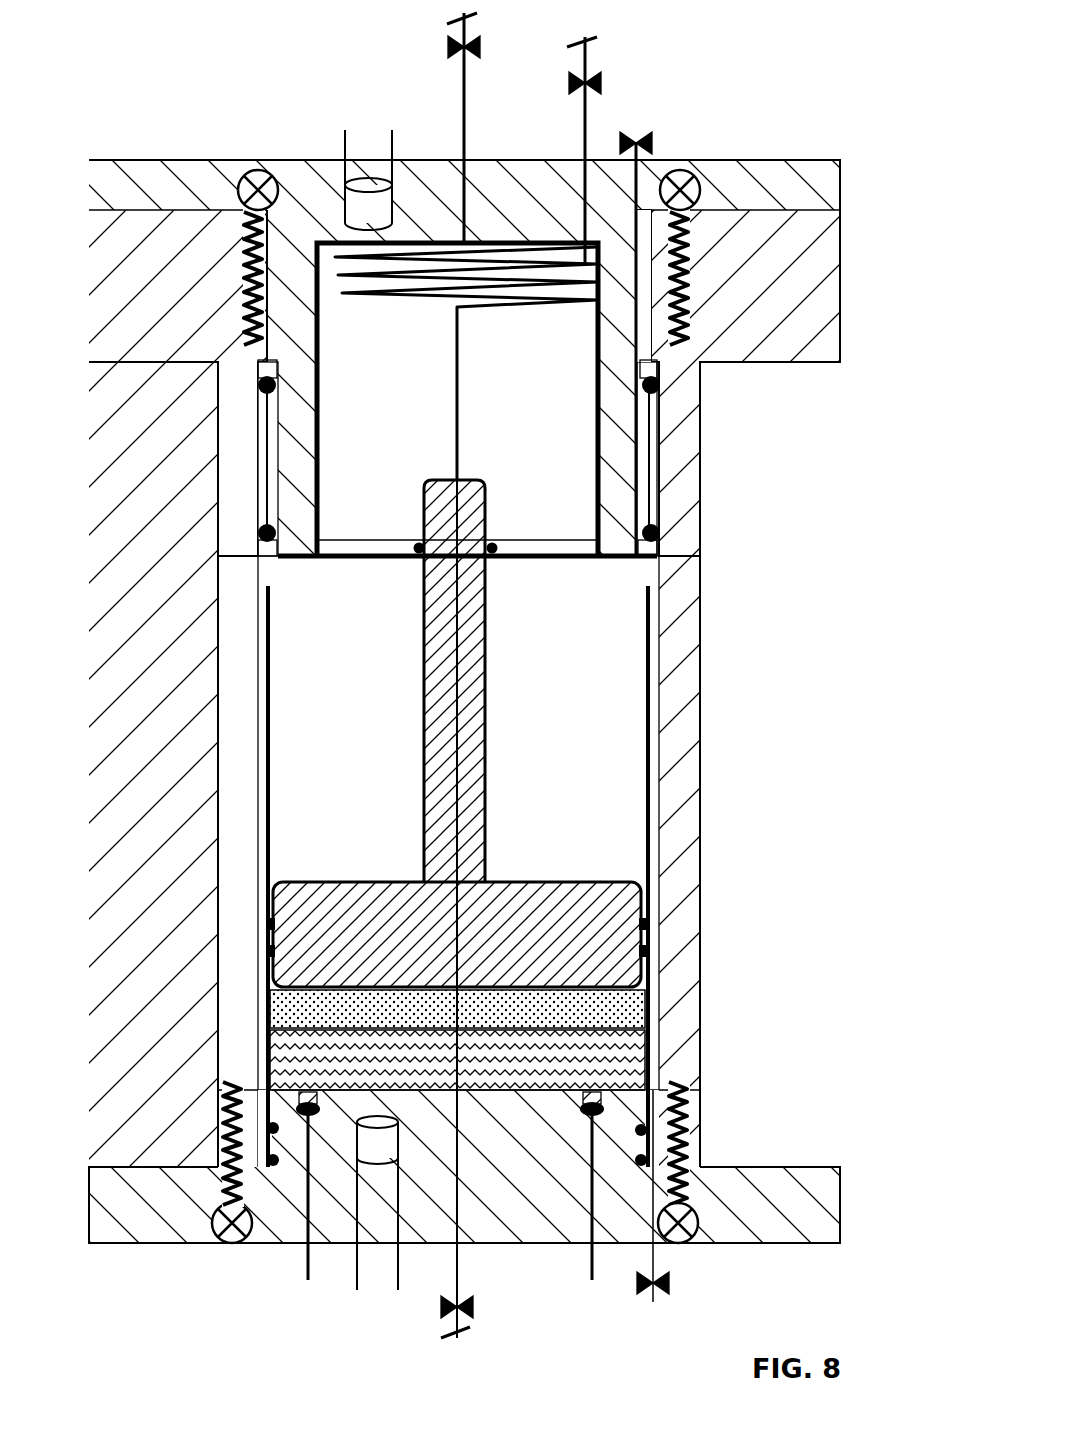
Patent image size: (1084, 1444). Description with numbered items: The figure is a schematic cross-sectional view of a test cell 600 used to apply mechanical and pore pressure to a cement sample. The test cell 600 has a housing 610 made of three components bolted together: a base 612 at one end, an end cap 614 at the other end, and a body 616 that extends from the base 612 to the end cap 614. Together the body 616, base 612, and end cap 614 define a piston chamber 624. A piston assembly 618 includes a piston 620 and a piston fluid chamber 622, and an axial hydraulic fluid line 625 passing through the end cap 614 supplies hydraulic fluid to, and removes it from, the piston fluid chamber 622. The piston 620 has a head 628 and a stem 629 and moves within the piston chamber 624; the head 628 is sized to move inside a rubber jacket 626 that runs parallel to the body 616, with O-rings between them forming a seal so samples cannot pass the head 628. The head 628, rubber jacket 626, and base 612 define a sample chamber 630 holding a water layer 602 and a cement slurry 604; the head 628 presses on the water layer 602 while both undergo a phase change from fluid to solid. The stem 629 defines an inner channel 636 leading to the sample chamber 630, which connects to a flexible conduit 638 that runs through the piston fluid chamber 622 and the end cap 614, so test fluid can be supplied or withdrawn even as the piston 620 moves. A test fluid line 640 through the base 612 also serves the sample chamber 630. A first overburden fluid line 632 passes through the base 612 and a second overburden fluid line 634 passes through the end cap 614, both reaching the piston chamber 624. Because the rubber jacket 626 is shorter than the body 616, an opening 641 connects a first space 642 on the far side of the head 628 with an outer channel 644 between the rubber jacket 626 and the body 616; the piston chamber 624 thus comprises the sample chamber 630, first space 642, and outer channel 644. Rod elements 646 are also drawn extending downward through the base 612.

The test cell 600 is at (503, 651).
The water layer 602 is at (640, 1012).
The cement slurry 604 is at (640, 1050).
The housing 610 is at (178, 606).
The base 612 is at (832, 1196).
The end cap 614 is at (841, 184).
The body 616 is at (701, 901).
The piston assembly 618 is at (548, 782).
The piston 620 is at (464, 822).
The piston fluid chamber 622 is at (408, 434).
The piston chamber 624 is at (366, 668).
The axial hydraulic fluid line 625 is at (575, 132).
The rubber jacket 626 is at (650, 812).
The head 628 is at (273, 884).
The stem 629 is at (486, 666).
The sample chamber 630 is at (246, 1062).
The first overburden fluid line 632 is at (637, 175).
The second overburden fluid line 634 is at (656, 1258).
The inner channel 636 is at (450, 744).
The conduit 638 is at (455, 358).
The test fluid line 640 is at (466, 1270).
The opening 641 is at (258, 568).
The first space 642 is at (300, 708).
The outer channel 644 is at (262, 910).
The heater rod 646 is at (616, 1108).